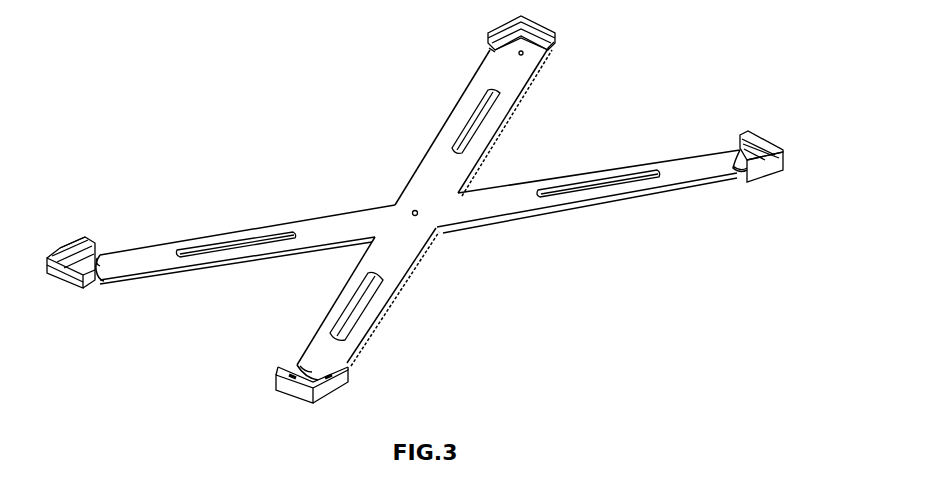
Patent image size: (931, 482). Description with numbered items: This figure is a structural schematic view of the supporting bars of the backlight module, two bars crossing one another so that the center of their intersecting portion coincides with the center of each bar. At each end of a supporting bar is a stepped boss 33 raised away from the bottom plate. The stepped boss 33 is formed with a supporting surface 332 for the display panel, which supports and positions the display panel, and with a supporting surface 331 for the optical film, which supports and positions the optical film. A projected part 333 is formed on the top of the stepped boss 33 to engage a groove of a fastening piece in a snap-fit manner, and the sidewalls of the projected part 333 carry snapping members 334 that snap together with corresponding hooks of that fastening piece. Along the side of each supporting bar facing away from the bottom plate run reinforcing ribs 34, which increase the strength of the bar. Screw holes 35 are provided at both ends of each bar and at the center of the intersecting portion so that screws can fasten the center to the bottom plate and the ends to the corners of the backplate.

The stepped boss 33 is at (557, 42).
The supporting surface for optical film 331 is at (547, 55).
The supporting surface for display panel 332 is at (486, 52).
The projected part 333 is at (76, 242).
The snapping member 334 is at (74, 272).
The reinforcing rib 34 is at (470, 117).
The screw hole 35 is at (521, 53).